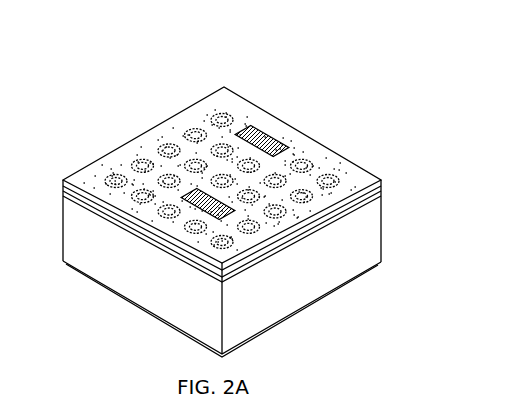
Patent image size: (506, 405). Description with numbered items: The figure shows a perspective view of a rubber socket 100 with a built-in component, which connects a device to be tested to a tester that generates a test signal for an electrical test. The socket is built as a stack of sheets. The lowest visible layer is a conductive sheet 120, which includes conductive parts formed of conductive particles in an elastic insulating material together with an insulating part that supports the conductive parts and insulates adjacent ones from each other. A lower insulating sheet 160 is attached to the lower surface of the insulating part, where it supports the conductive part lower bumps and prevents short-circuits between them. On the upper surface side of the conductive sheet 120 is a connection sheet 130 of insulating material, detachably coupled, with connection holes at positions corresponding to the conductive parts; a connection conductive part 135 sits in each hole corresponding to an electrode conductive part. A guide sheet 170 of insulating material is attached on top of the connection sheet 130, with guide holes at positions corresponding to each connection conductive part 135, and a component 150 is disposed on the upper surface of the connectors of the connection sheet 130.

The rubber socket 100 is at (51, 92).
The conductive sheet 120 is at (371, 243).
The connection sheet 130 is at (383, 185).
The connection conductive part 135 is at (193, 133).
The component 150 is at (266, 130).
The lower insulating sheet 160 is at (335, 289).
The guide sheet 170 is at (360, 166).